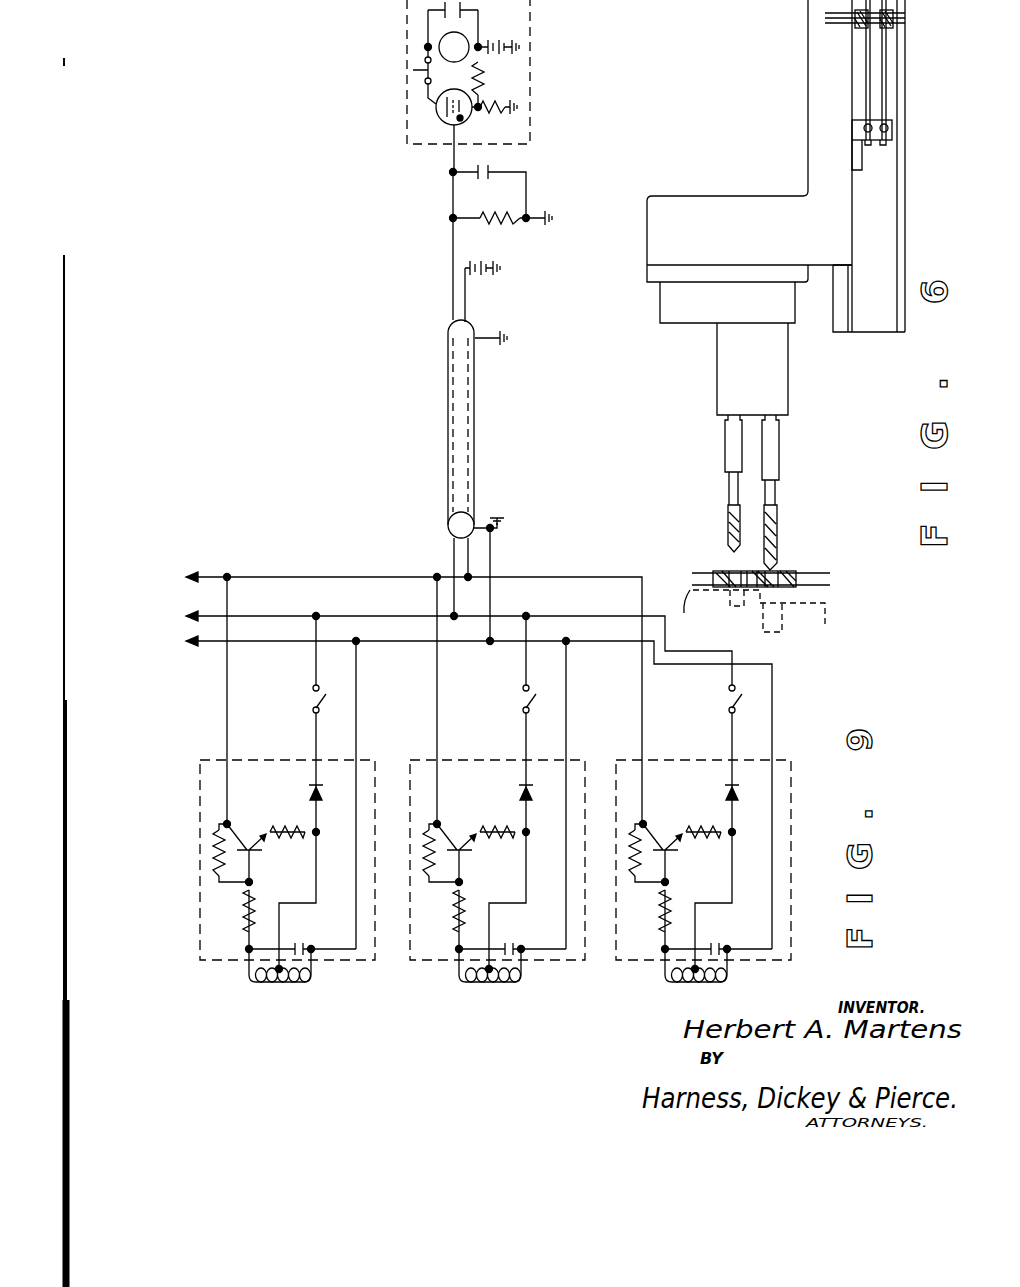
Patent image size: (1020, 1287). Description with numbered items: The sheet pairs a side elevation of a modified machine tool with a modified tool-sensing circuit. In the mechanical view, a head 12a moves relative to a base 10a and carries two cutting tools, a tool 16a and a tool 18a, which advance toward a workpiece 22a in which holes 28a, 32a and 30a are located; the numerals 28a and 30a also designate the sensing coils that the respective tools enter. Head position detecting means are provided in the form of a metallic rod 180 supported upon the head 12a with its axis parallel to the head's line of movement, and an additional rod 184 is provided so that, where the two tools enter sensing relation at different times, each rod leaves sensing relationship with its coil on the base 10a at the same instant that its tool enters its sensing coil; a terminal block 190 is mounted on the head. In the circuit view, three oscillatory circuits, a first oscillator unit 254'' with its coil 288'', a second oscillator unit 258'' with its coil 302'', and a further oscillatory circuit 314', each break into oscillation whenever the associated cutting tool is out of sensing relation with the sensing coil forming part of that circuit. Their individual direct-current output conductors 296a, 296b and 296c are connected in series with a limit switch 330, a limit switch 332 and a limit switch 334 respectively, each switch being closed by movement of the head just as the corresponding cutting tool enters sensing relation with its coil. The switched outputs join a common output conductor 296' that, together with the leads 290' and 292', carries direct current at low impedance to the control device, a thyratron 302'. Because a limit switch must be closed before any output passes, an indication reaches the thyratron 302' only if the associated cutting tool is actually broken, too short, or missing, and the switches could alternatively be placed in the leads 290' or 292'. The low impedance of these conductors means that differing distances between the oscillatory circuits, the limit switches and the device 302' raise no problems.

In FIG. 6, the head 12a is at (716, 194).
In FIG. 6, the base 10a is at (893, 214).
In FIG. 6, the additional rod 184 is at (867, 112).
In FIG. 6, the terminal block 190 is at (868, 30).
In FIG. 6, the metallic rod 180 is at (888, 102).
In FIG. 6, the tool 16a is at (730, 497).
In FIG. 6, the tool 18a is at (777, 498).
In FIG. 6, the workpiece 22a is at (690, 592).
In FIG. 6, the sensing coil 28a is at (732, 572).
In FIG. 6, the second hole 32a is at (752, 572).
In FIG. 6, the sensing coil 30a is at (782, 568).
In FIG. 9, the thyratron 302' is at (437, 86).
In FIG. 9, the common output conductor 296' is at (459, 426).
In FIG. 9, the lead 290' is at (405, 542).
In FIG. 9, the lead 292' is at (479, 729).
In FIG. 9, the first oscillator unit 254'' is at (273, 913).
In FIG. 9, the first oscillator coil 288'' is at (276, 1012).
In FIG. 9, the second oscillator unit 258'' is at (485, 917).
In FIG. 9, the second oscillator coil 302'' is at (491, 1008).
In FIG. 9, the oscillatory circuit 314' is at (675, 834).
In FIG. 9, the D.C. output conductor 296a is at (316, 750).
In FIG. 9, the D.C. output conductor 296b is at (526, 750).
In FIG. 9, the D.C. output conductor 296c is at (731, 752).
In FIG. 9, the limit switch 330 is at (324, 702).
In FIG. 9, the limit switch 332 is at (533, 702).
In FIG. 9, the limit switch 334 is at (739, 702).